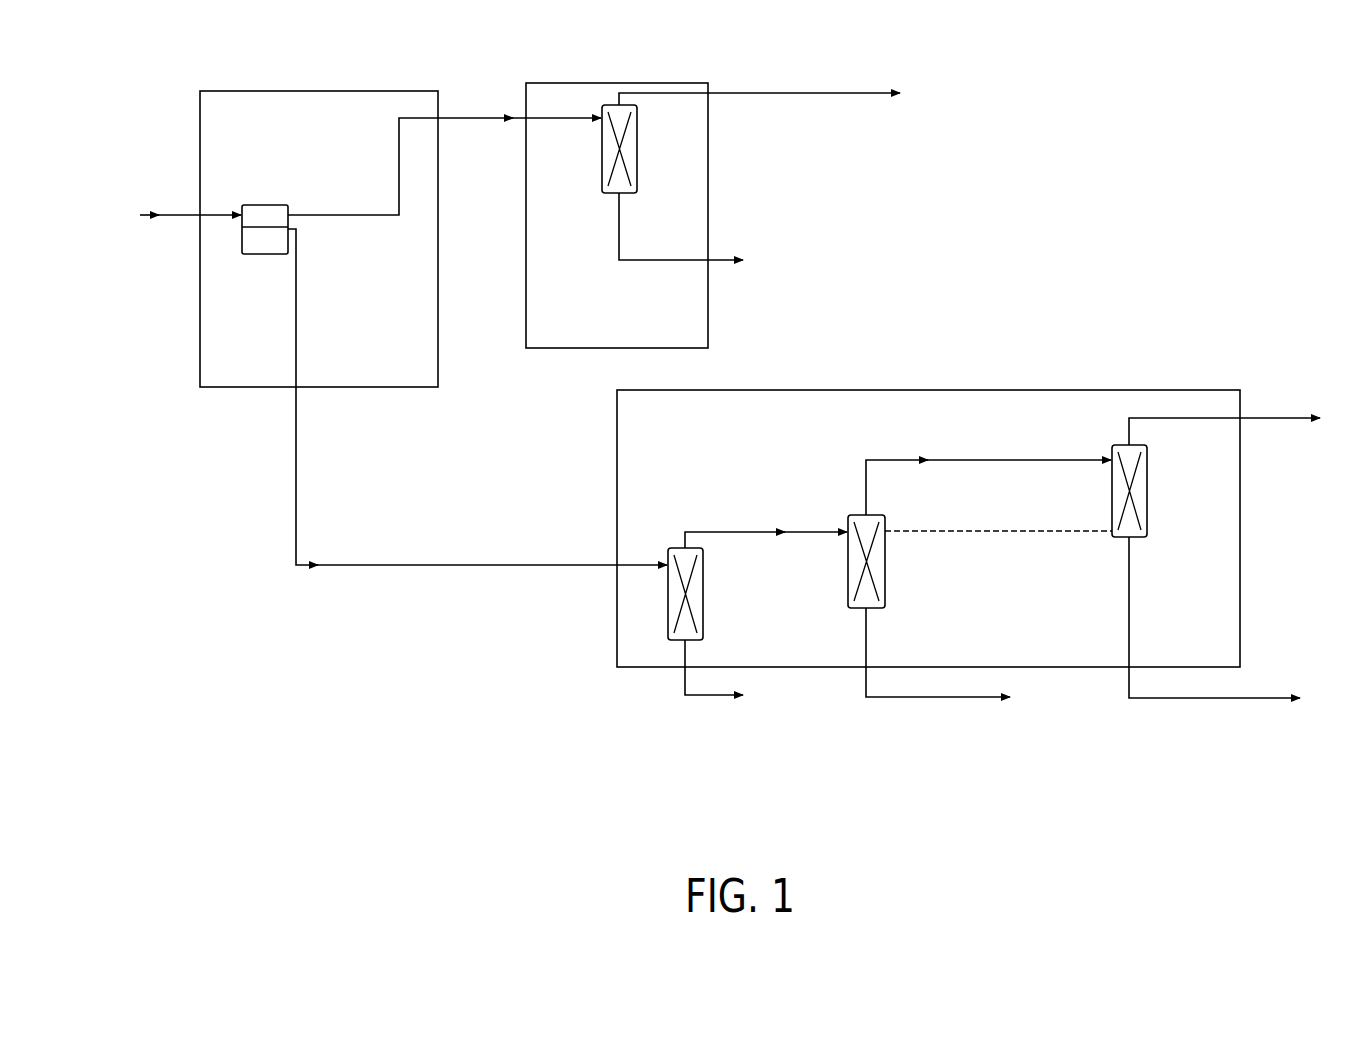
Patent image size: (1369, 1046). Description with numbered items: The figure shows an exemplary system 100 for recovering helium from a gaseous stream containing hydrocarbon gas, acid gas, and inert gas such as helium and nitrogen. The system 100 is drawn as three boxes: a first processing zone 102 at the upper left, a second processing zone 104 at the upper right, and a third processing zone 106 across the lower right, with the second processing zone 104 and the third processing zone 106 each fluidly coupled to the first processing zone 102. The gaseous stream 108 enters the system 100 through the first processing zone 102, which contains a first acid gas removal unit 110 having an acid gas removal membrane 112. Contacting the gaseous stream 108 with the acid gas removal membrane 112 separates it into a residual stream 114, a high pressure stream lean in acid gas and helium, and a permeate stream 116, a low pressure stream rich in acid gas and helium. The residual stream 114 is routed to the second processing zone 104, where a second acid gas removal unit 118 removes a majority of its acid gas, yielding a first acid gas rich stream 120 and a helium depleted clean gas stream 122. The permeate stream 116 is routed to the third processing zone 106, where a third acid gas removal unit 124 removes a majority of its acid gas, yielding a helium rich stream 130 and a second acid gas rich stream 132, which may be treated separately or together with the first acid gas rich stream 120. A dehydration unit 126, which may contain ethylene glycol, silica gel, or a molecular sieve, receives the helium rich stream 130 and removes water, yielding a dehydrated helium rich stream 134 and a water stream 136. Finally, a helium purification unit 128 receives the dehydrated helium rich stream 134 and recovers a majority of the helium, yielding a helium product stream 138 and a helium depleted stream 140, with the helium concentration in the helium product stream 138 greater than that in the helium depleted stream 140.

The system 100 is at (141, 72).
The first processing zone 102 is at (199, 294).
The second processing zone 104 is at (525, 322).
The third processing zone 106 is at (616, 595).
The gaseous stream 108 is at (152, 205).
The first acid gas removal unit 110 is at (277, 204).
The acid gas removal membrane 112 is at (282, 224).
The residual stream 114 is at (493, 117).
The permeate stream 116 is at (295, 413).
The second acid gas removal unit 118 is at (601, 172).
The first acid gas rich stream 120 is at (722, 257).
The helium depleted clean gas stream 122 is at (820, 91).
The third acid gas removal unit 124 is at (672, 545).
The dehydration unit 126 is at (878, 608).
The helium purification unit 128 is at (1148, 488).
The helium rich stream 130 is at (745, 530).
The second acid gas rich stream 132 is at (702, 700).
The dehydrated helium rich stream 134 is at (888, 459).
The water stream 136 is at (937, 699).
The helium product stream 138 is at (1247, 697).
The helium depleted stream 140 is at (1247, 417).